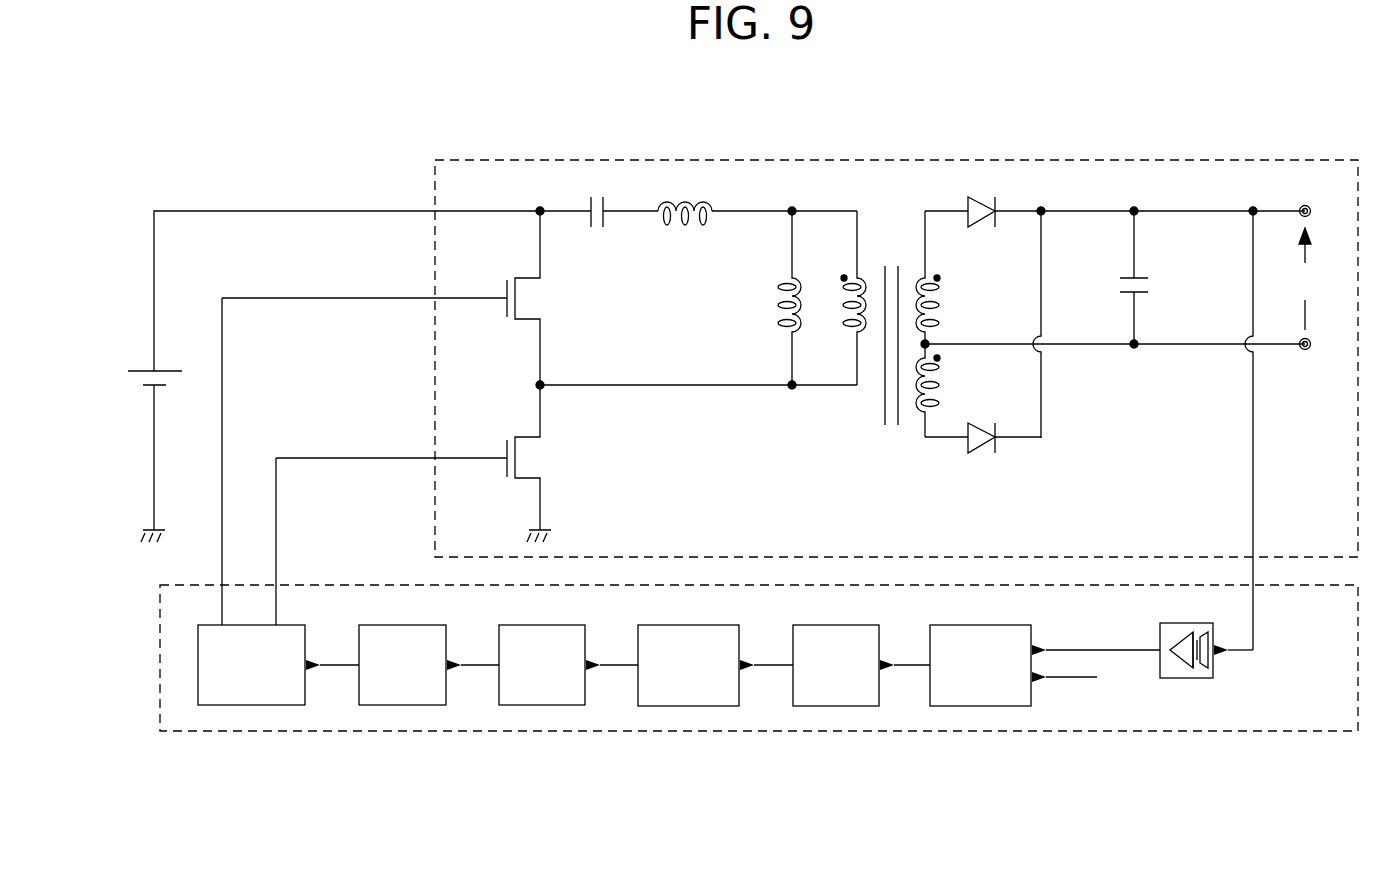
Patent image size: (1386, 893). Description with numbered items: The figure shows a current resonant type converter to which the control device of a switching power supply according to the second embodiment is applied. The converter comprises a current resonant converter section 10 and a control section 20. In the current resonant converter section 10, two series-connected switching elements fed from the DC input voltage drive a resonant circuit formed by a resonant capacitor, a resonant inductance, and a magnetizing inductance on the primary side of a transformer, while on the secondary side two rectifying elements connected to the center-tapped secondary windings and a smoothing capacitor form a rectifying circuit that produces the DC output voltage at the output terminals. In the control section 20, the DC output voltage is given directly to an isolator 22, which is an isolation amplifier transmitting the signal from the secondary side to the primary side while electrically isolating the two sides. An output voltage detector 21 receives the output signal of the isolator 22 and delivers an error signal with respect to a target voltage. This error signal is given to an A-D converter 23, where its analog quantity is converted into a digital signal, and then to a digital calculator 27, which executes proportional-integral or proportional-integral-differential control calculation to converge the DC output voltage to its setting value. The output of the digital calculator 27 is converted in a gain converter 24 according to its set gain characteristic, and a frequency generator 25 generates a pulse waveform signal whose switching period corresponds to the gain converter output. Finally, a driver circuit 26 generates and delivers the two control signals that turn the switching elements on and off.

The current resonant converter section 10 is at (1080, 160).
The control section 20 is at (1213, 732).
The output voltage detector 21 is at (1000, 625).
The isolator 22 is at (1187, 622).
The A-D converter 23 is at (847, 625).
The gain converter 24 is at (558, 625).
The frequency generator 25 is at (418, 625).
The driver circuit 26 is at (293, 625).
The digital calculator 27 is at (703, 625).